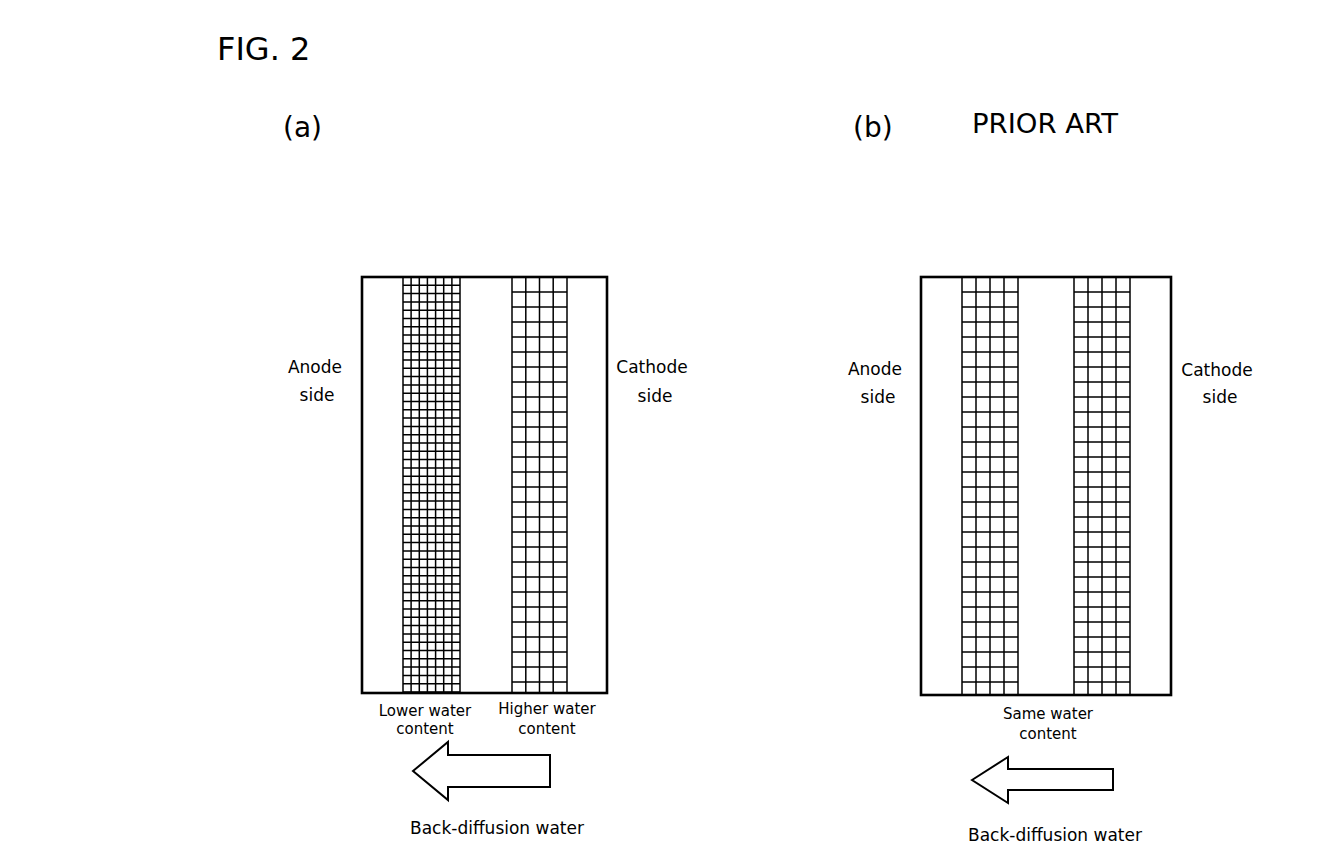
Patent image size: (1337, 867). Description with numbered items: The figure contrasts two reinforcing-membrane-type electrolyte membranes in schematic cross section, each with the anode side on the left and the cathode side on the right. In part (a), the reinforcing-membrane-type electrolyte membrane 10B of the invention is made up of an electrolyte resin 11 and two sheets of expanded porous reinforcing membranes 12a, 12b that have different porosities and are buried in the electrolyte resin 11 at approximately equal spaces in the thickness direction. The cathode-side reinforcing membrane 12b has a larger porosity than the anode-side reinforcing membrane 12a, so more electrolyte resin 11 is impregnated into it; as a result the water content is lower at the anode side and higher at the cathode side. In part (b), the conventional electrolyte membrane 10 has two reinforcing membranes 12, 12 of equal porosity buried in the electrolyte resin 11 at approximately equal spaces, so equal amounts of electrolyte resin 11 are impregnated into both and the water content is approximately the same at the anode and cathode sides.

The reinforcing-membrane-type electrolyte membrane 10B is at (504, 433).
The conventional electrolyte membrane 10 is at (1055, 429).
The electrolyte resin 11 is at (370, 566).
The reinforcing membrane 12 is at (980, 282).
The reinforcing membrane 12a is at (428, 285).
The reinforcing membrane 12b is at (532, 282).